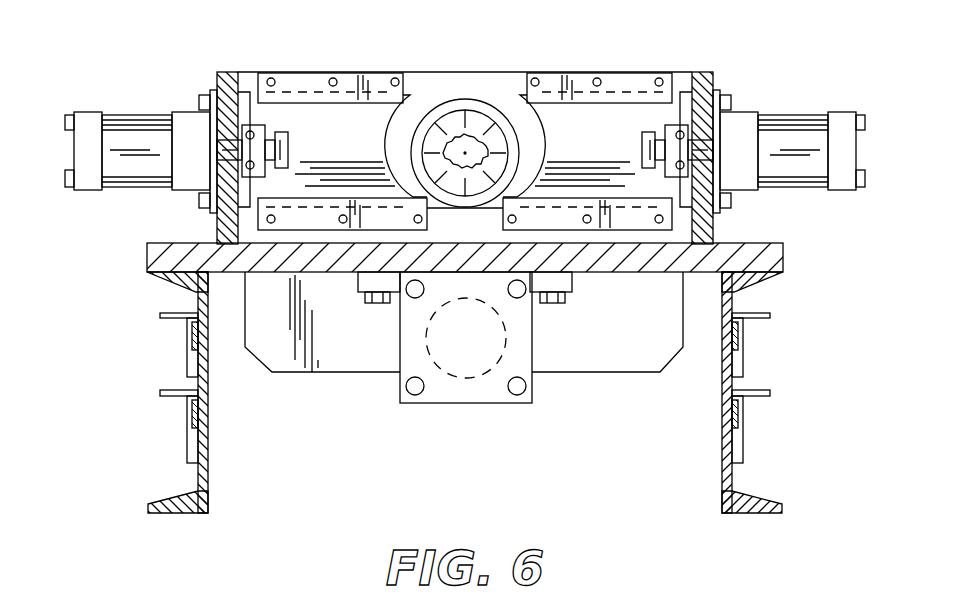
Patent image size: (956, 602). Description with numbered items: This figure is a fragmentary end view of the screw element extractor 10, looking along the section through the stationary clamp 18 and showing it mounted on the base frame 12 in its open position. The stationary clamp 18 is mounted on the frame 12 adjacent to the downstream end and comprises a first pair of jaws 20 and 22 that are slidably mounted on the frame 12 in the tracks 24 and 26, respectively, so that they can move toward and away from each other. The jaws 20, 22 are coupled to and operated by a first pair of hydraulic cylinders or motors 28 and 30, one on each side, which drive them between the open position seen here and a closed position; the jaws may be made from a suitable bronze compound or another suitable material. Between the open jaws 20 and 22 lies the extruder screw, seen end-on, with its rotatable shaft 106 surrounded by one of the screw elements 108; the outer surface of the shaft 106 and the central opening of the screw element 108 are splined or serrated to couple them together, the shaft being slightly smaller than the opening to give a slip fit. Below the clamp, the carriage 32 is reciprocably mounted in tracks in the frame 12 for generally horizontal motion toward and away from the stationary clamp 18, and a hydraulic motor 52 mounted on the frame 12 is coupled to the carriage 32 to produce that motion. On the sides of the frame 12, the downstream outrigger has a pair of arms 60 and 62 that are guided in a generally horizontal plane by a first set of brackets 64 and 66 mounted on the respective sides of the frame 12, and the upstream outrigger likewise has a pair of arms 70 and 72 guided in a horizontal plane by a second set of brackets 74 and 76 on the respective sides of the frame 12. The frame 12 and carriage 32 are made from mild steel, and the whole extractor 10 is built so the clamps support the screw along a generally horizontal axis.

The screw element extractor 10 is at (655, 60).
The base frame 12 is at (722, 470).
The stationary clamp 18 is at (366, 66).
The jaw 20 is at (371, 140).
The jaw 22 is at (597, 120).
The track 24 is at (305, 78).
The track 26 is at (650, 74).
The hydraulic cylinder 28 is at (138, 148).
The hydraulic cylinder 30 is at (797, 147).
The carriage 32 is at (372, 358).
The hydraulic motor 52 is at (500, 398).
The arm 60 is at (166, 314).
The arm 62 is at (772, 318).
The bracket 64 is at (186, 356).
The bracket 66 is at (744, 368).
The arm 70 is at (172, 397).
The arm 72 is at (772, 397).
The bracket 74 is at (186, 452).
The bracket 76 is at (744, 450).
The shaft 106 is at (464, 145).
The screw elements 108 is at (488, 138).